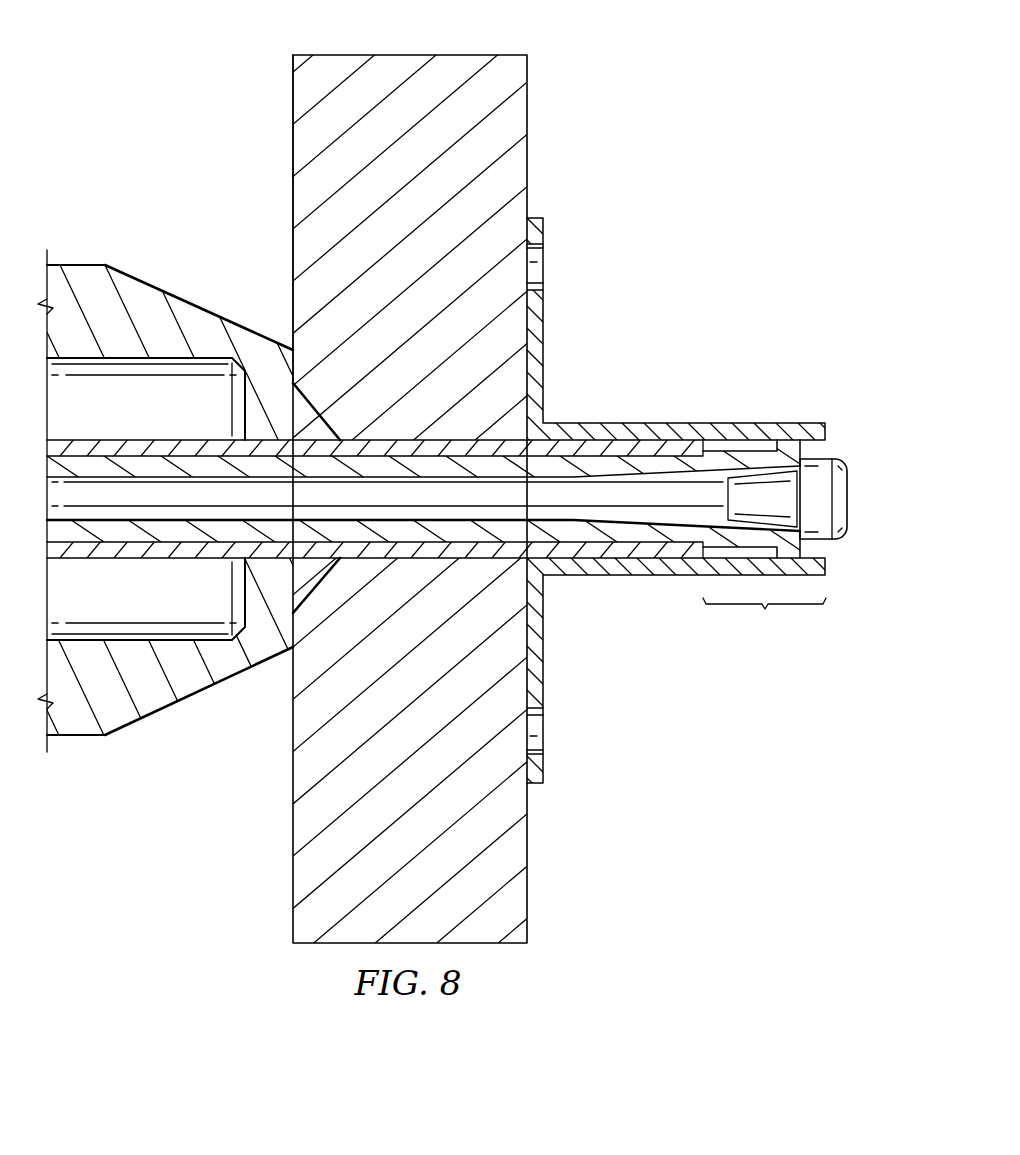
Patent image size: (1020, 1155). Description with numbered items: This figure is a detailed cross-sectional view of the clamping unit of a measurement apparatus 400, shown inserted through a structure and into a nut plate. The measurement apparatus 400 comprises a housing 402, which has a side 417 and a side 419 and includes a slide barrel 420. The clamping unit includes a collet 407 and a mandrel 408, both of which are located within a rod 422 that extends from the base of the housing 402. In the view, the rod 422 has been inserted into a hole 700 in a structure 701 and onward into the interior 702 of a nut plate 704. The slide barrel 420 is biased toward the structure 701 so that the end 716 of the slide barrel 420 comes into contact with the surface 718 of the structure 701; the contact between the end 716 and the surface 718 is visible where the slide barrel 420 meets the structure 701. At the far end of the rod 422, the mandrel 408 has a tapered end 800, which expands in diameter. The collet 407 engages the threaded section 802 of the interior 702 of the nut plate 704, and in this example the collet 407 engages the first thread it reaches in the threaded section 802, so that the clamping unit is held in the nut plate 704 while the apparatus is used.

The measurement apparatus 400 is at (684, 255).
The housing 402 is at (179, 758).
The collet 407 is at (731, 460).
The mandrel 408 is at (849, 473).
The side 417 is at (75, 265).
The side 419 is at (92, 737).
The slide barrel 420 is at (164, 292).
The rod 422 is at (652, 441).
The hole 700 is at (537, 565).
The structure 701 is at (357, 55).
The interior 702 is at (762, 448).
The nut plate 704 is at (566, 423).
The end 716 is at (291, 338).
The surface 718 is at (292, 148).
The tapered end 800 is at (849, 526).
The threaded section 802 is at (764, 620).